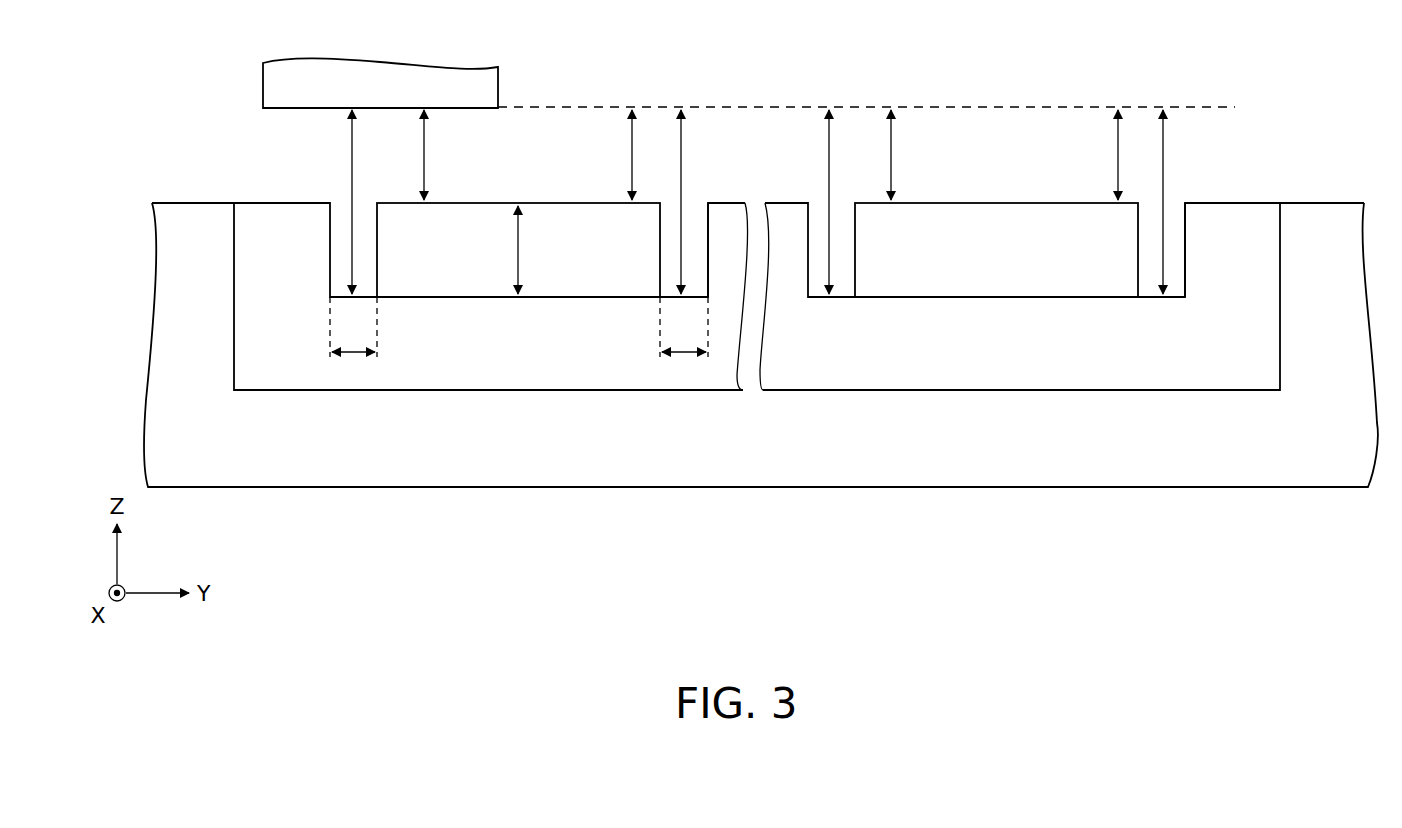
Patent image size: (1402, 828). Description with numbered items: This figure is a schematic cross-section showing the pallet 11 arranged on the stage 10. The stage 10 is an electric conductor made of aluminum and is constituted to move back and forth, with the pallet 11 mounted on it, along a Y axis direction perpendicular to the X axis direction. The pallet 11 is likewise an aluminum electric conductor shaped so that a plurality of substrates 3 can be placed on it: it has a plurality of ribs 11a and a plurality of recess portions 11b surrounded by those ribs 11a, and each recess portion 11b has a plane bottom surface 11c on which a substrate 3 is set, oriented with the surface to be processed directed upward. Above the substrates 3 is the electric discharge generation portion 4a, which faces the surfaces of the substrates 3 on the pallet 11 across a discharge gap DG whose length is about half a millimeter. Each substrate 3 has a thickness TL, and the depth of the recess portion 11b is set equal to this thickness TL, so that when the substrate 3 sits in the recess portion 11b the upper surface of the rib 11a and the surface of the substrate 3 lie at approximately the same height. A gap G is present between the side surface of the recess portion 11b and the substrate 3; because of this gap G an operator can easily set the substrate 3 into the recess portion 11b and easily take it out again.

The stage 10 is at (198, 478).
The pallet 11 is at (240, 268).
The rib 11a is at (282, 213).
The recess portion 11b is at (700, 188).
The bottom surface 11c is at (448, 300).
The substrate 3 is at (590, 290).
The electric discharge generation portion 4a is at (263, 91).
The discharge gap DG is at (352, 151).
The thickness TL is at (534, 250).
The gap G is at (519, 327).